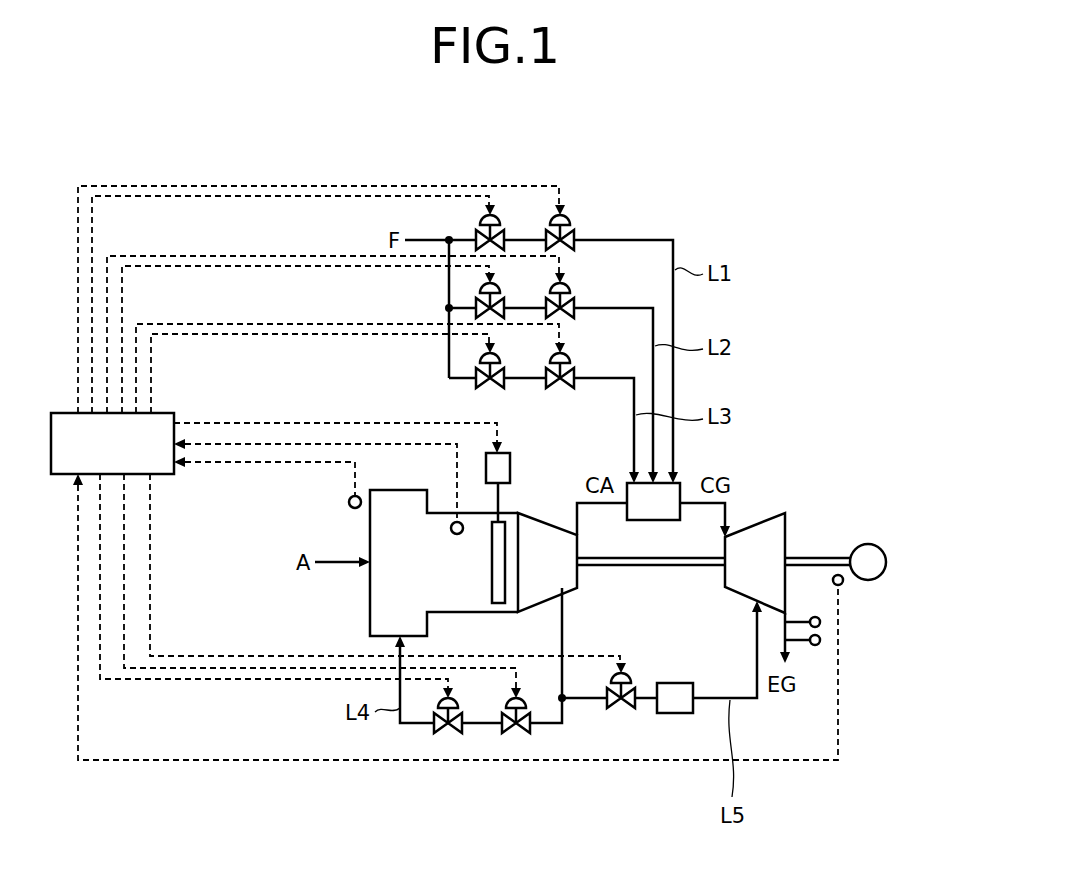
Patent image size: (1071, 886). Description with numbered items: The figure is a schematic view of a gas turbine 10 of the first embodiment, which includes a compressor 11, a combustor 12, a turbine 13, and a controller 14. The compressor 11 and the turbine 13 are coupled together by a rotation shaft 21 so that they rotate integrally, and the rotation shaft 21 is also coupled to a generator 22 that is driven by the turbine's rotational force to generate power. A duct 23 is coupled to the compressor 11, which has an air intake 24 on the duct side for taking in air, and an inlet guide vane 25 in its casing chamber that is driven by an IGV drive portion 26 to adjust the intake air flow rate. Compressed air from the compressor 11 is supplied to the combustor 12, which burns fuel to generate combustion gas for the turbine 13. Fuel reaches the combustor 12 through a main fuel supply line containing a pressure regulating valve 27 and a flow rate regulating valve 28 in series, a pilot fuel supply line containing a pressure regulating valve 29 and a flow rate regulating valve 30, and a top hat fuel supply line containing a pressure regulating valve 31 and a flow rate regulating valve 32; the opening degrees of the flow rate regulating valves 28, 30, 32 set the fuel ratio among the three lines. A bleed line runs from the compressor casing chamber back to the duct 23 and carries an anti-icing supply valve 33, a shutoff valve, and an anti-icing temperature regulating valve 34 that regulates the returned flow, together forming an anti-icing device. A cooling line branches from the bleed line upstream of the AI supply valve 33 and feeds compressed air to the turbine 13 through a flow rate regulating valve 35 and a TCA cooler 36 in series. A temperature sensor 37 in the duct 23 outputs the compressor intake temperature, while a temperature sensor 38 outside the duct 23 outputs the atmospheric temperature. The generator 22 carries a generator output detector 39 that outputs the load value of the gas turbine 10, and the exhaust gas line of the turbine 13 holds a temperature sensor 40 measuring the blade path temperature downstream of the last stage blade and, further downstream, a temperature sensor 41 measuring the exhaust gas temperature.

The gas turbine 10 is at (765, 153).
The compressor 11 is at (534, 625).
The combustor 12 is at (655, 532).
The turbine 13 is at (797, 513).
The controller 14 is at (58, 413).
The rotation shaft 21 is at (620, 568).
The generator 22 is at (888, 562).
The duct 23 is at (370, 614).
The air intake 24 is at (516, 586).
The inlet guide vane 25 is at (495, 567).
The IGV drive portion 26 is at (512, 460).
The pressure regulating valve 27 is at (478, 221).
The flow rate regulating valve 28 is at (572, 218).
The pressure regulating valve 29 is at (478, 290).
The flow rate regulating valve 30 is at (572, 298).
The pressure regulating valve 31 is at (478, 360).
The flow rate regulating valve 32 is at (572, 366).
The anti-icing supply valve 33 is at (515, 734).
The anti-icing temperature regulating valve 34 is at (447, 734).
The flow rate regulating valve 35 is at (616, 708).
The TCA cooler 36 is at (675, 714).
The temperature sensor 37 is at (450, 528).
The temperature sensor 38 is at (348, 502).
The generator output detector 39 is at (843, 584).
The temperature sensor 40 is at (820, 622).
The temperature sensor 41 is at (820, 640).